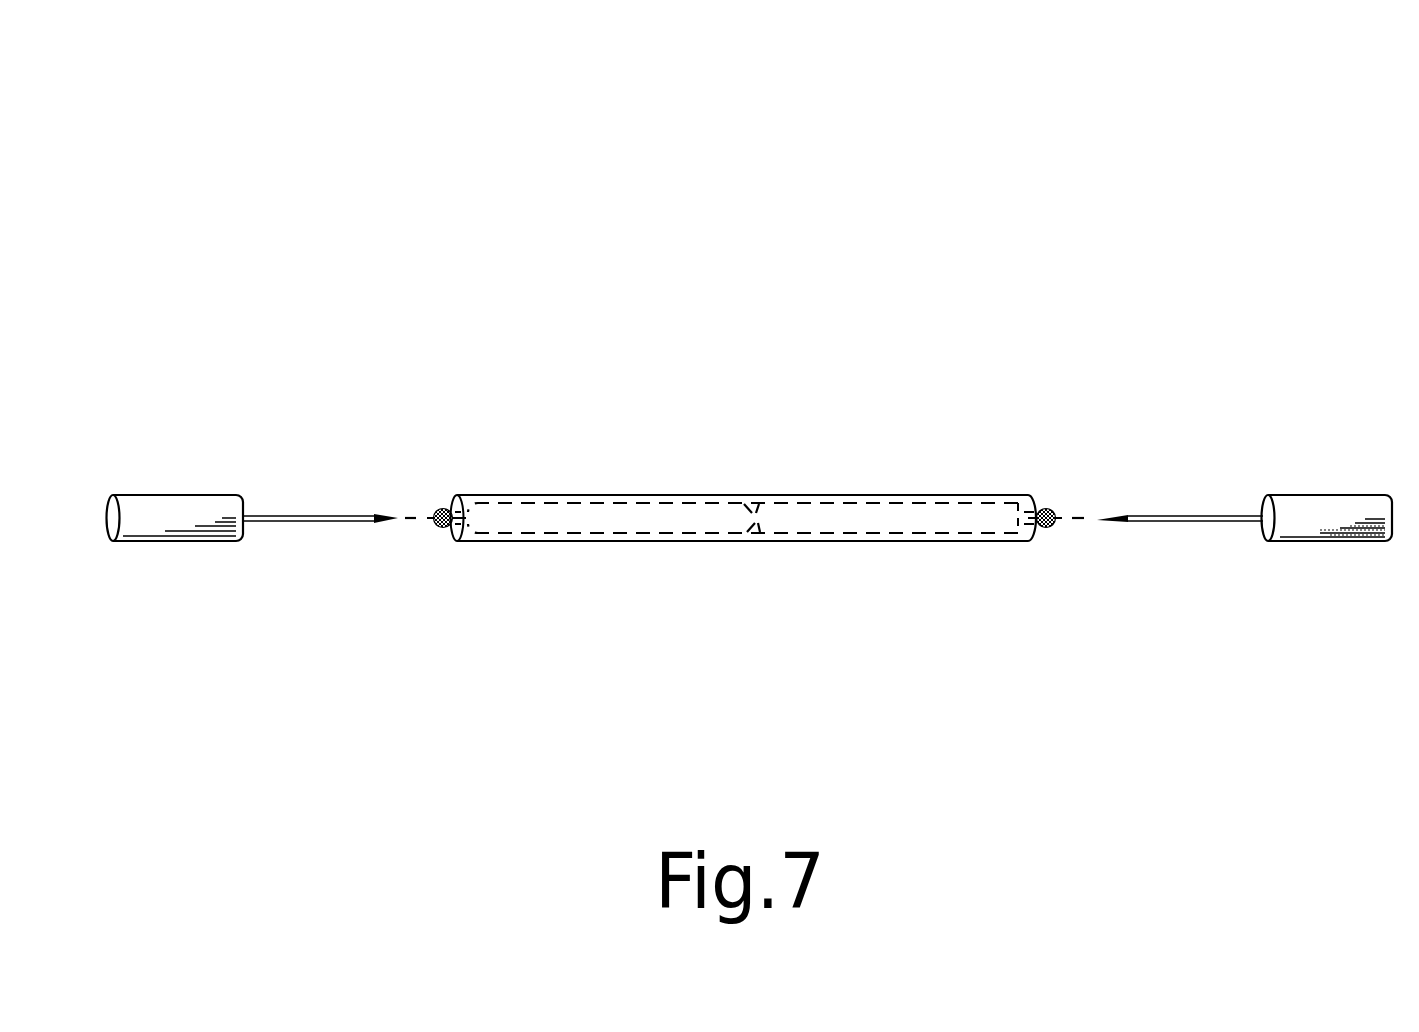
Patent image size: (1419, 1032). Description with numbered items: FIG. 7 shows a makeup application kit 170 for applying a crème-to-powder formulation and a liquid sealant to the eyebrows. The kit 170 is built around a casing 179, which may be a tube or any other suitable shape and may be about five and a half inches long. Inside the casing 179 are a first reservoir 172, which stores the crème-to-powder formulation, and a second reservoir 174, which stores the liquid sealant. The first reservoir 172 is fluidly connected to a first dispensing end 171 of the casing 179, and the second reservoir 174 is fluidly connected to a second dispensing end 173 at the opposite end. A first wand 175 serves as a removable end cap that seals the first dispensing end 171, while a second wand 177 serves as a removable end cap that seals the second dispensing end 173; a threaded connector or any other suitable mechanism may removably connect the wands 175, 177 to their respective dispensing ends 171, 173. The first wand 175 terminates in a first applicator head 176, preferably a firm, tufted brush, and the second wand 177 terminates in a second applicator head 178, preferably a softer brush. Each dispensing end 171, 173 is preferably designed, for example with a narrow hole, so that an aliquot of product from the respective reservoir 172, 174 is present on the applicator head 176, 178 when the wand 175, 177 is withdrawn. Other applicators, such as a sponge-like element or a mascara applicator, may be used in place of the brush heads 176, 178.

The kit 170 is at (705, 210).
The first dispensing end 171 is at (441, 497).
The first reservoir 172 is at (578, 503).
The second dispensing end 173 is at (1044, 499).
The second reservoir 174 is at (850, 503).
The first wand 175 is at (240, 470).
The first applicator head 176 is at (388, 516).
The second wand 177 is at (1257, 470).
The second applicator head 178 is at (1112, 517).
The casing 179 is at (748, 541).